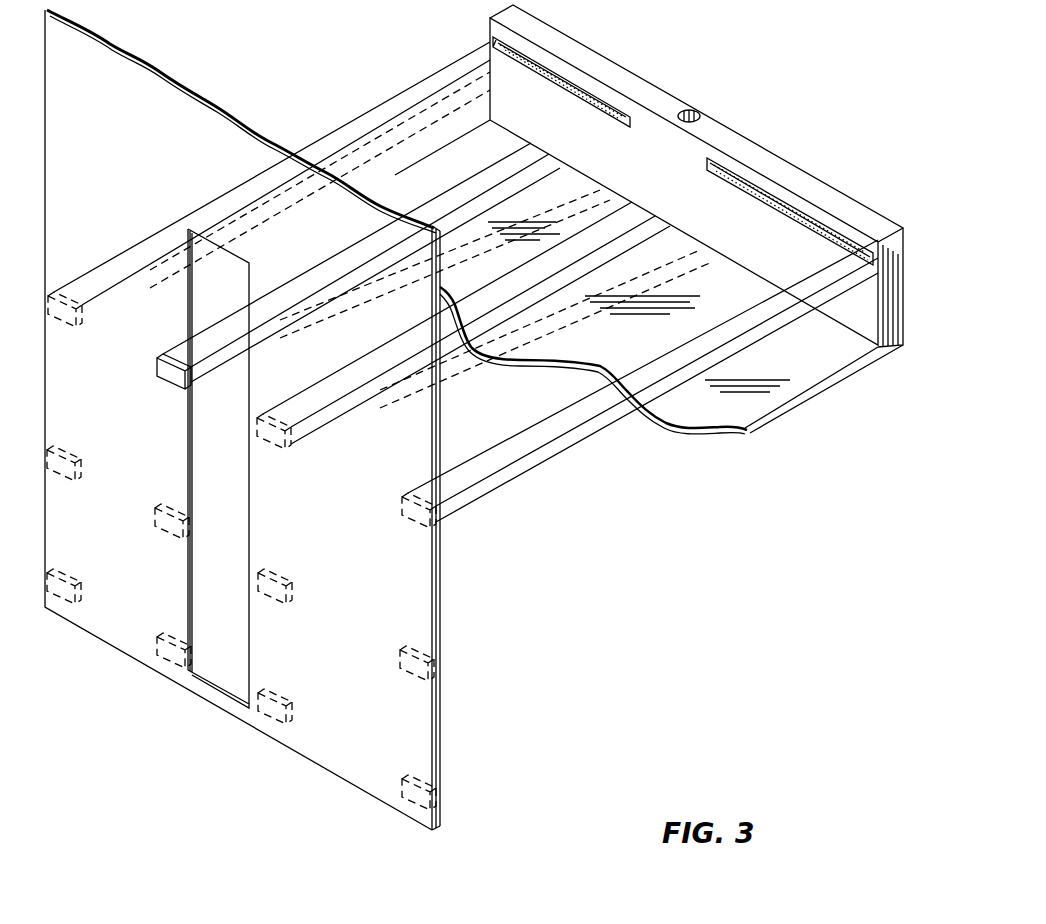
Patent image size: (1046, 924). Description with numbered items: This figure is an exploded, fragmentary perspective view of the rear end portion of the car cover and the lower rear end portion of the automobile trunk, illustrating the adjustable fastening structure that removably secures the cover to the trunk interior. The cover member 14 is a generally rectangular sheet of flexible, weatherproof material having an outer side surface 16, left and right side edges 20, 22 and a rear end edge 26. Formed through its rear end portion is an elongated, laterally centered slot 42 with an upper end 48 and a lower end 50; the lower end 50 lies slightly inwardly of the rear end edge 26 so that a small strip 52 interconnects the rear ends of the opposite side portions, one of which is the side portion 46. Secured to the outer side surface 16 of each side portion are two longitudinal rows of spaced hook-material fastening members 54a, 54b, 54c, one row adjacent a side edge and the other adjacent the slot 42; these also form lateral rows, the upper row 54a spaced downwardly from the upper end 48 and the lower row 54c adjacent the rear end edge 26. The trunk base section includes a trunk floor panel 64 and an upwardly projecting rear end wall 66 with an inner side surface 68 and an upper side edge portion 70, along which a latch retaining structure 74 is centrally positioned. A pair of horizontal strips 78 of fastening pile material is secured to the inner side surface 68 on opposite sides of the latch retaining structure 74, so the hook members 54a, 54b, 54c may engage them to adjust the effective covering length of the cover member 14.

The car cover member 14 is at (440, 594).
The outer side surface 16 is at (346, 492).
The left side edge 20 is at (45, 219).
The right side edge 22 is at (440, 563).
The rear end edge 26 is at (360, 790).
The slot 42 is at (190, 480).
The side portion 46 is at (416, 610).
The upper end of slot 48 is at (232, 262).
The lower end of slot 50 is at (234, 690).
The strip 52 is at (236, 708).
The fastening members 54a is at (72, 298).
The fastening members 54b is at (70, 476).
The fastening members 54c is at (80, 600).
The trunk floor panel 64 is at (806, 380).
The rear end wall 66 is at (892, 304).
The inner side surface 68 is at (778, 261).
The upper side edge portion 70 is at (777, 164).
The latch retaining structure 74 is at (694, 106).
The strips of fastening pile material 78 is at (562, 96).